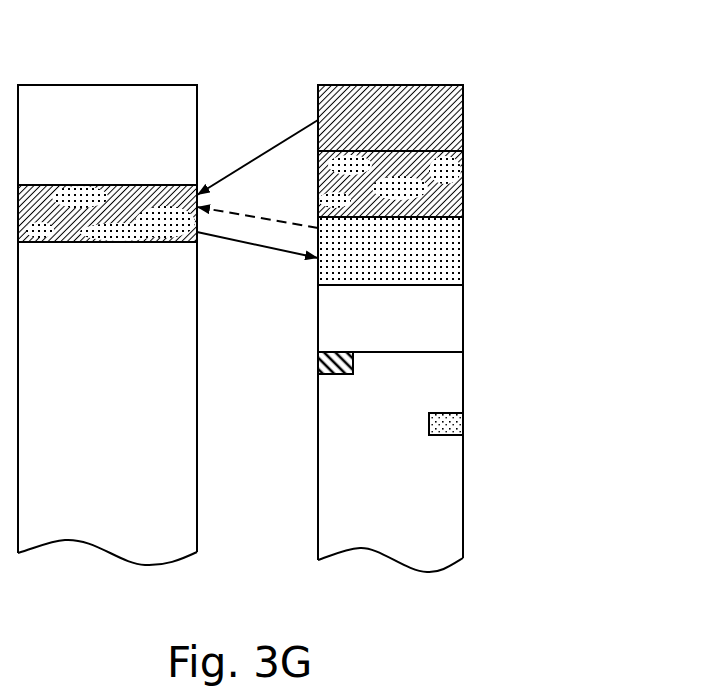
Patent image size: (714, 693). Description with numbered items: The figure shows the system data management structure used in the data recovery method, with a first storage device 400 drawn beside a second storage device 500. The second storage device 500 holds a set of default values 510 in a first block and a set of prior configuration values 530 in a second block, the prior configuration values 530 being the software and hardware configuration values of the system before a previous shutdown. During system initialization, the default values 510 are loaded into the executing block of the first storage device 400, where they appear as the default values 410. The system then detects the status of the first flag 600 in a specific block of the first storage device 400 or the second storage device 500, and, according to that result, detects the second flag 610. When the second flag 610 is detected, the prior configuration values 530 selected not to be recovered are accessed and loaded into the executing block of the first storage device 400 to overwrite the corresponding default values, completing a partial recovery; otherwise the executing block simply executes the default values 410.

The first storage device 400 is at (135, 510).
The default values 410 is at (107, 213).
The second storage device 500 is at (413, 510).
The default values 510 is at (414, 104).
The prior configuration values 530 is at (443, 265).
The first flag 600 is at (353, 362).
The second flag 610 is at (445, 429).